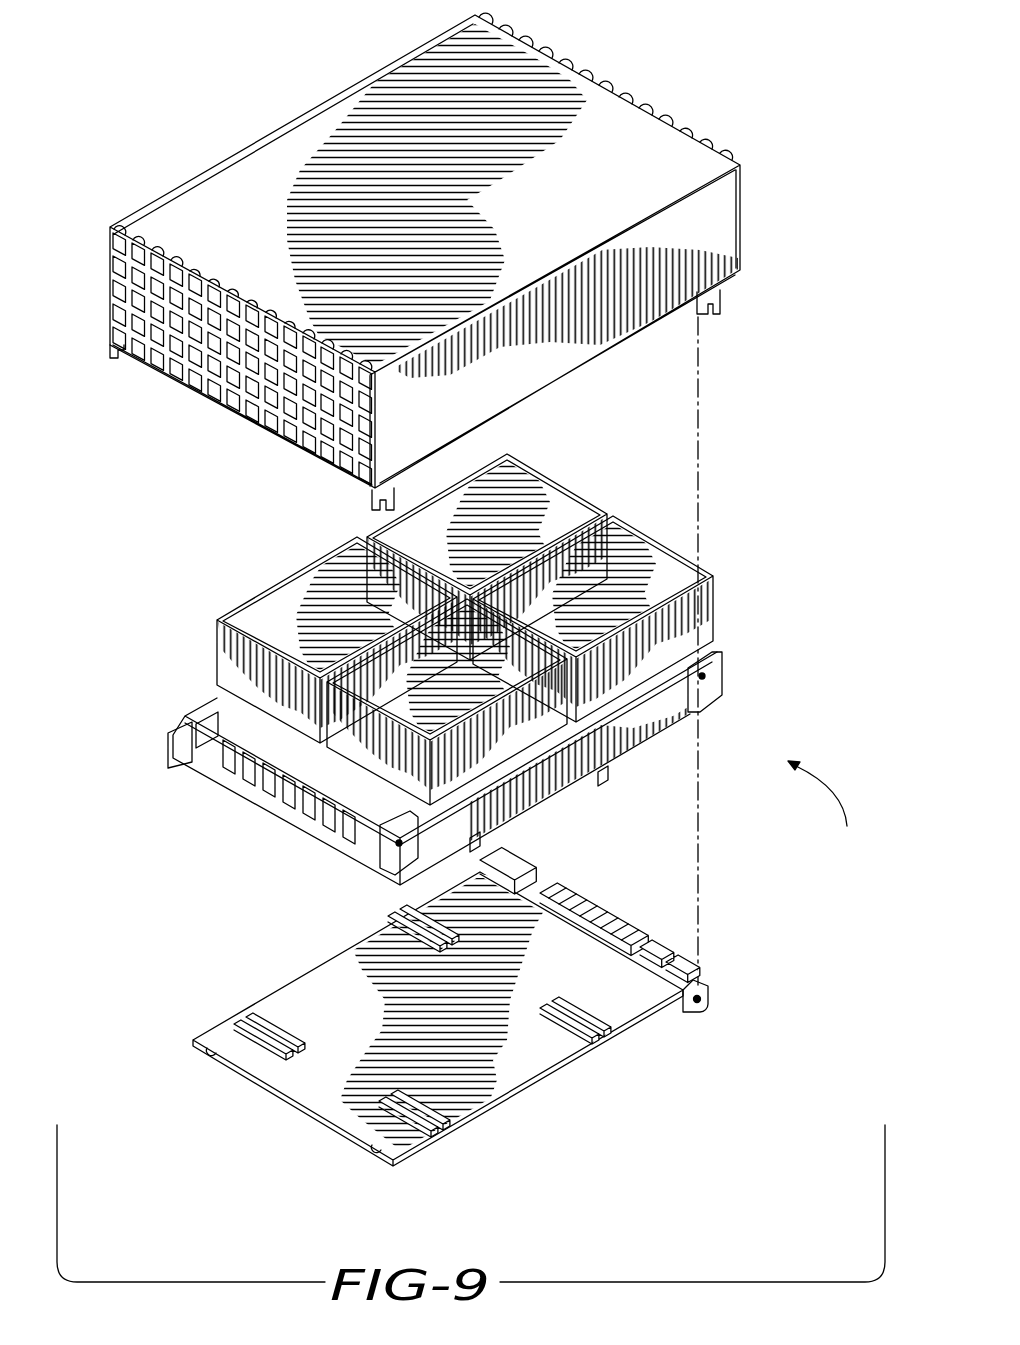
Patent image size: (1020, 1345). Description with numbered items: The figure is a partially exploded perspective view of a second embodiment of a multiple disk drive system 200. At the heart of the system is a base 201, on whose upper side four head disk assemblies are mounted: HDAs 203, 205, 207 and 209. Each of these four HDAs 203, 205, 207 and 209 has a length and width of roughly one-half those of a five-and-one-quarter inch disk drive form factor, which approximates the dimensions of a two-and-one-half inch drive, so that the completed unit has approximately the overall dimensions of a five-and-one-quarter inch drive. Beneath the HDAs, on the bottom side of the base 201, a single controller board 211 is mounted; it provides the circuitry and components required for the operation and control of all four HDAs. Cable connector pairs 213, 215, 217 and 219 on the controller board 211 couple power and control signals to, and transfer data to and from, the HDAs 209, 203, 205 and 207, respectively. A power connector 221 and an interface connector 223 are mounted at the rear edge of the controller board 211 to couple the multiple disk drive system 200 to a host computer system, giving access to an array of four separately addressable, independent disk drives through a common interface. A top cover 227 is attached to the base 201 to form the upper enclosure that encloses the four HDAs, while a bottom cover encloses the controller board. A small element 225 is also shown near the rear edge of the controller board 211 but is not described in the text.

The multiple disk drive system 200 is at (826, 811).
The base 201 is at (200, 708).
The HDA 203 is at (260, 612).
The HDA 205 is at (566, 492).
The HDA 207 is at (636, 540).
The HDA 209 is at (393, 706).
The controller board 211 is at (547, 1072).
The cable connector pair 213 is at (432, 1132).
The cable connector pair 215 is at (302, 1040).
The cable connector pair 217 is at (395, 920).
The cable connector pair 219 is at (618, 1025).
The power connector 221 is at (527, 862).
The interface connector 223 is at (633, 878).
The connector blocks 225 is at (660, 950).
The top cover 227 is at (282, 128).